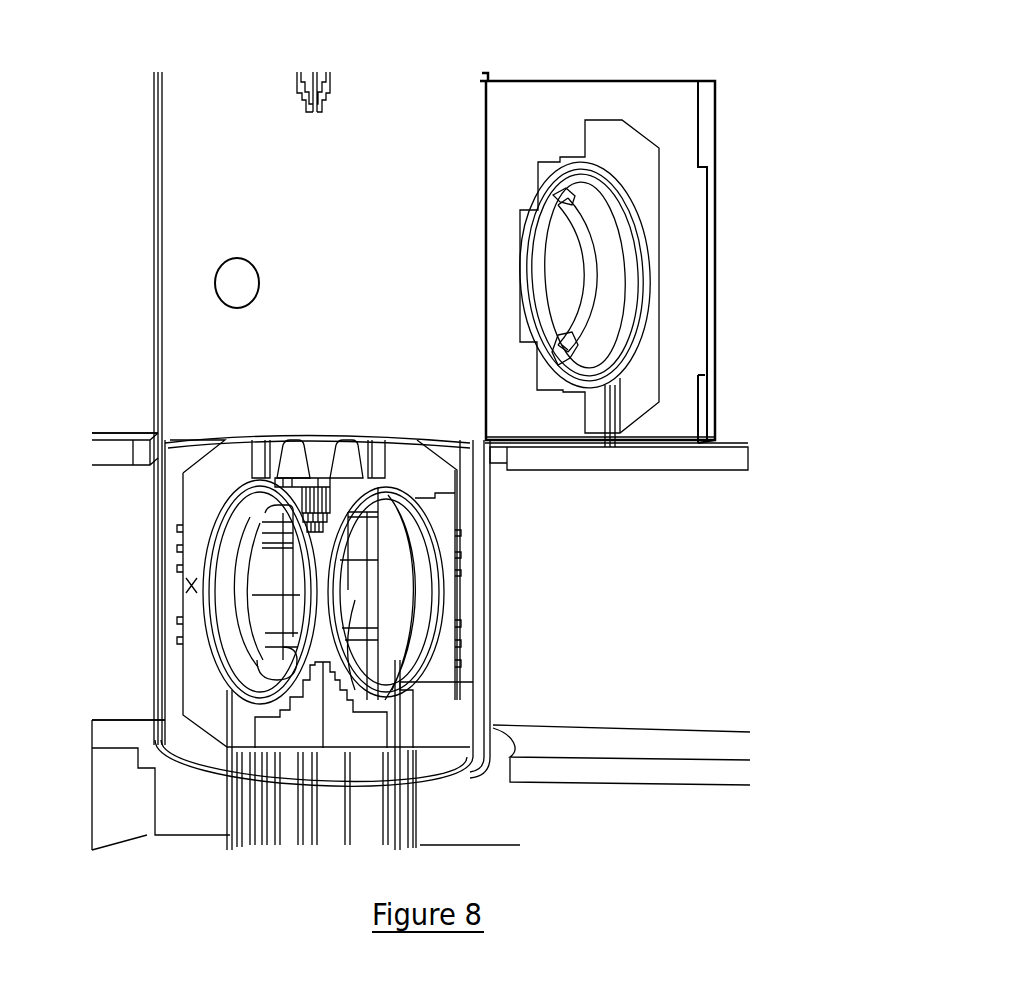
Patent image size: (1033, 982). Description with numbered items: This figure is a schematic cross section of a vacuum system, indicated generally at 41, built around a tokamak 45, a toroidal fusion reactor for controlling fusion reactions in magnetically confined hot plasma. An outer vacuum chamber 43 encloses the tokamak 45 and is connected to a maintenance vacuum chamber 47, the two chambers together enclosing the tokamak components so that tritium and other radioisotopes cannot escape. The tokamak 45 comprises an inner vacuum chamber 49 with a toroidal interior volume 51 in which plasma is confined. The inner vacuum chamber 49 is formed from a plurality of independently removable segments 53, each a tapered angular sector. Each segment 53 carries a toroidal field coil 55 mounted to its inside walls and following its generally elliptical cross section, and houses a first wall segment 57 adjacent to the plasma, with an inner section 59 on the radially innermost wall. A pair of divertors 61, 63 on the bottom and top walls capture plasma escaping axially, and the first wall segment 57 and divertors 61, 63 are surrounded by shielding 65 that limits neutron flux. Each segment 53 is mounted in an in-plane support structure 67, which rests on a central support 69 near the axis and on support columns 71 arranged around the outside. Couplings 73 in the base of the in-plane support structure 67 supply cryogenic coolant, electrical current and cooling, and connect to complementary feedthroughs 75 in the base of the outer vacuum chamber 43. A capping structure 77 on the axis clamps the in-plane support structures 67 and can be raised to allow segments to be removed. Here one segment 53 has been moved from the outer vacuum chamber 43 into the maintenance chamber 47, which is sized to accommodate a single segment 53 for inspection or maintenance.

The plasma processing assembly 41 is at (122, 238).
The outer vacuum chamber 43 is at (155, 382).
The tokamak 45 is at (195, 604).
The maintenance vacuum chamber 47 is at (640, 80).
The inner vacuum chamber 49 is at (437, 625).
The toroidal interior volume 51 is at (417, 580).
The segment 53 is at (633, 220).
The toroidal field coil 55 is at (640, 273).
The first wall segment 57 is at (593, 305).
The inner section of the first wall segment 59 is at (537, 272).
The divertor 61 is at (540, 370).
The divertor 63 is at (570, 207).
The shielding 65 is at (603, 335).
The in-plane support structure 67 is at (648, 373).
The central support 69 is at (363, 733).
The support column 71 is at (467, 510).
The coupling 73 is at (610, 448).
The feedthrough 75 is at (383, 767).
The capping structure 77 is at (329, 98).